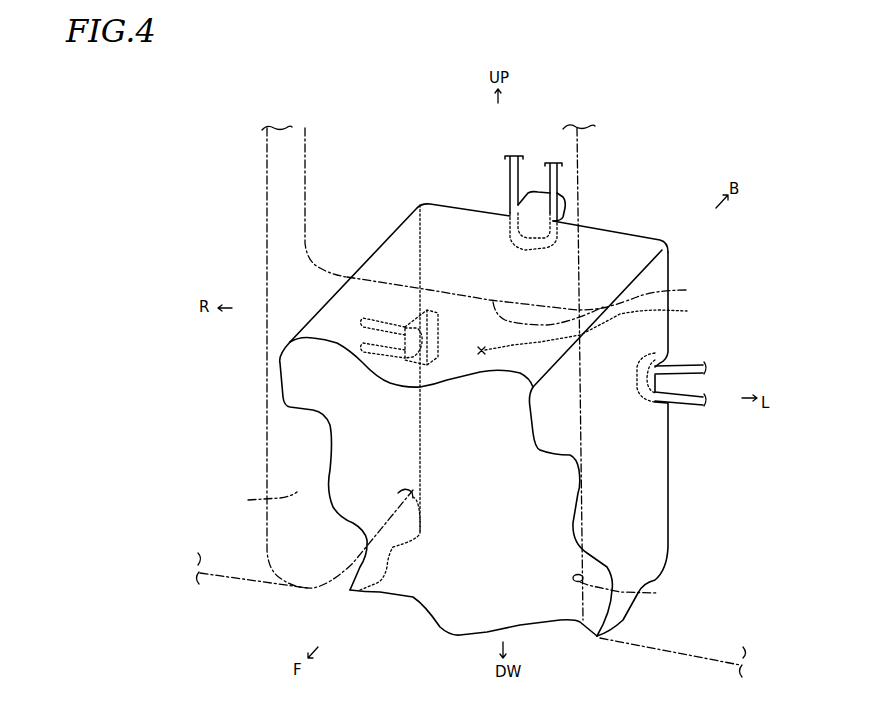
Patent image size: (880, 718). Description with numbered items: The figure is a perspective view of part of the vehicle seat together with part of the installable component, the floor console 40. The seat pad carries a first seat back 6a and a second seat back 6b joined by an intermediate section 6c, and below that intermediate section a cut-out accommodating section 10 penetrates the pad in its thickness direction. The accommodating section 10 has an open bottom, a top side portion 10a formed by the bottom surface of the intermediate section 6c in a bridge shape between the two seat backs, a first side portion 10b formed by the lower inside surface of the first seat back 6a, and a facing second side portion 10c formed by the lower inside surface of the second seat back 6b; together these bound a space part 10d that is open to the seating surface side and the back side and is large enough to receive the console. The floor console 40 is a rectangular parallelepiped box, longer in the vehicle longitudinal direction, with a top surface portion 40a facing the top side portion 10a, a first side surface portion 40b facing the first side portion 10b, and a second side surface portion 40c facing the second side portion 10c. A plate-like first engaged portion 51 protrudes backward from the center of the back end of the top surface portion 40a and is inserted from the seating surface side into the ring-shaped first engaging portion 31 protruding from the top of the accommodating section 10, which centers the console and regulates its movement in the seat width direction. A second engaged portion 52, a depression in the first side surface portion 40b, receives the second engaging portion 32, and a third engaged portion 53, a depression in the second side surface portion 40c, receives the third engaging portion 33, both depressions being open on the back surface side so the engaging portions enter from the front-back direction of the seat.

The first seat back 6a is at (673, 655).
The second seat back 6b is at (232, 584).
The intermediate section 6c is at (301, 173).
The accommodating section 10 is at (470, 440).
The top side portion 10a is at (532, 301).
The first side portion 10b is at (631, 590).
The second side portion 10c is at (242, 500).
The space part 10d is at (598, 329).
The first engaging portion 31 is at (557, 180).
The second engaging portion 32 is at (683, 370).
The third engaging portion 33 is at (387, 317).
The floor console 40 is at (504, 403).
The top surface portion 40a is at (453, 238).
The first side surface portion 40b is at (630, 452).
The second side surface portion 40c is at (357, 428).
The first engaged portion 51 is at (562, 208).
The second engaged portion 52 is at (660, 347).
The third engaged portion 53 is at (422, 313).